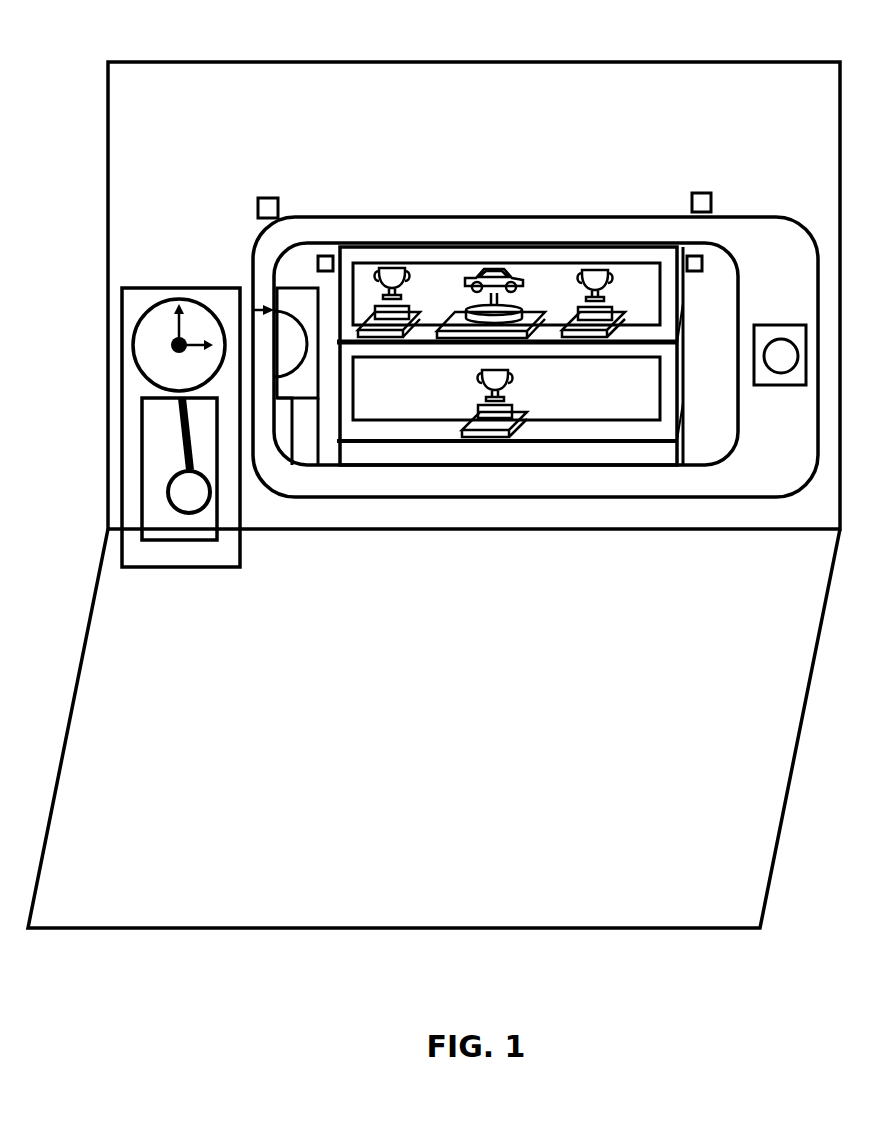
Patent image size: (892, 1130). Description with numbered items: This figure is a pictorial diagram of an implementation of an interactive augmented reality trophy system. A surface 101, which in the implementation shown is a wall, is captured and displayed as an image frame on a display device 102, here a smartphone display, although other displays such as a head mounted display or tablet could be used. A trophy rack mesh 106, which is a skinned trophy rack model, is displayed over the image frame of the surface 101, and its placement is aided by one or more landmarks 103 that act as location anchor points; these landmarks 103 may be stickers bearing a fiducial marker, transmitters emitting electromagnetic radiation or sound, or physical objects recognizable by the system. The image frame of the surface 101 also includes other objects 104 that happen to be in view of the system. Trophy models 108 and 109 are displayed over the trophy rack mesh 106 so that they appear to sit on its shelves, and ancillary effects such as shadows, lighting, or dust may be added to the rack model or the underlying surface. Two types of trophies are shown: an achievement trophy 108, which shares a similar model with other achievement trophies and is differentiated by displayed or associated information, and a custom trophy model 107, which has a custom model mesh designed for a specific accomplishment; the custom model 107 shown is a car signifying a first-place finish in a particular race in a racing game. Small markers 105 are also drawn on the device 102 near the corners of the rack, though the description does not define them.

The surface 101 is at (668, 76).
The display device 102 is at (548, 218).
The landmarks 103 is at (272, 206).
The other objects 104 is at (138, 290).
The sensors on device 105 is at (330, 257).
The trophy rack mesh 106 is at (393, 254).
The custom trophy model 107 is at (478, 267).
The achievement trophy 108 is at (510, 438).
The trophy model 109 is at (717, 444).